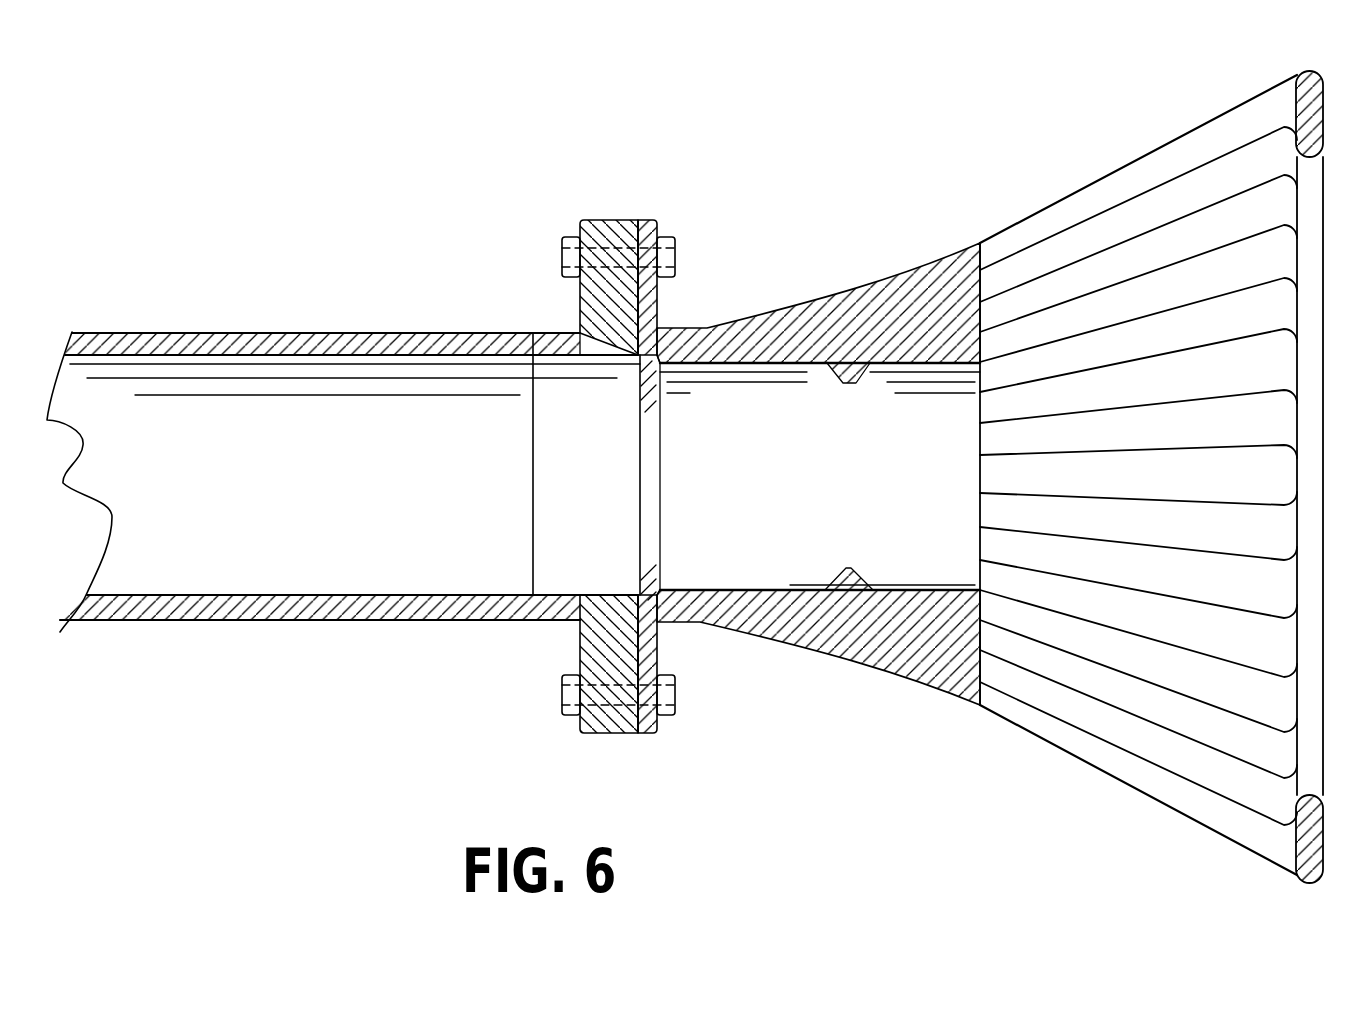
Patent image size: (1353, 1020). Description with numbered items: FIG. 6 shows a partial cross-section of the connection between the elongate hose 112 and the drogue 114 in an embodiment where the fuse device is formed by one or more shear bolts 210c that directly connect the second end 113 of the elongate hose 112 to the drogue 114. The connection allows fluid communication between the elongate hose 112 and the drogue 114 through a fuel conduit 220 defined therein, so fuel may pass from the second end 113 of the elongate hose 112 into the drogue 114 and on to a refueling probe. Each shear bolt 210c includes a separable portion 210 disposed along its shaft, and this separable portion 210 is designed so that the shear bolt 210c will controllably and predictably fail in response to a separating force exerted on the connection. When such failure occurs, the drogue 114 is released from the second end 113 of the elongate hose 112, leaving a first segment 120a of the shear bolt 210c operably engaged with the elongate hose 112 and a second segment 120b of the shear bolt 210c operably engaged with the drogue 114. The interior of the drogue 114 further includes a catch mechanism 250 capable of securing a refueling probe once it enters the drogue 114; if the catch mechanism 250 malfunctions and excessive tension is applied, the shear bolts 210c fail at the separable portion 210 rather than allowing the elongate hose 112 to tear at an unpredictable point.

The elongate hose 112 is at (280, 395).
The second end of the elongate hose 113 is at (555, 333).
The drogue 114 is at (952, 254).
The first segment 120a is at (640, 199).
The second segment 120b is at (683, 236).
The separable portion 210 is at (648, 222).
The shear bolt 210c is at (641, 240).
The fuel conduit 220 is at (460, 499).
The catch mechanism 250 is at (853, 383).